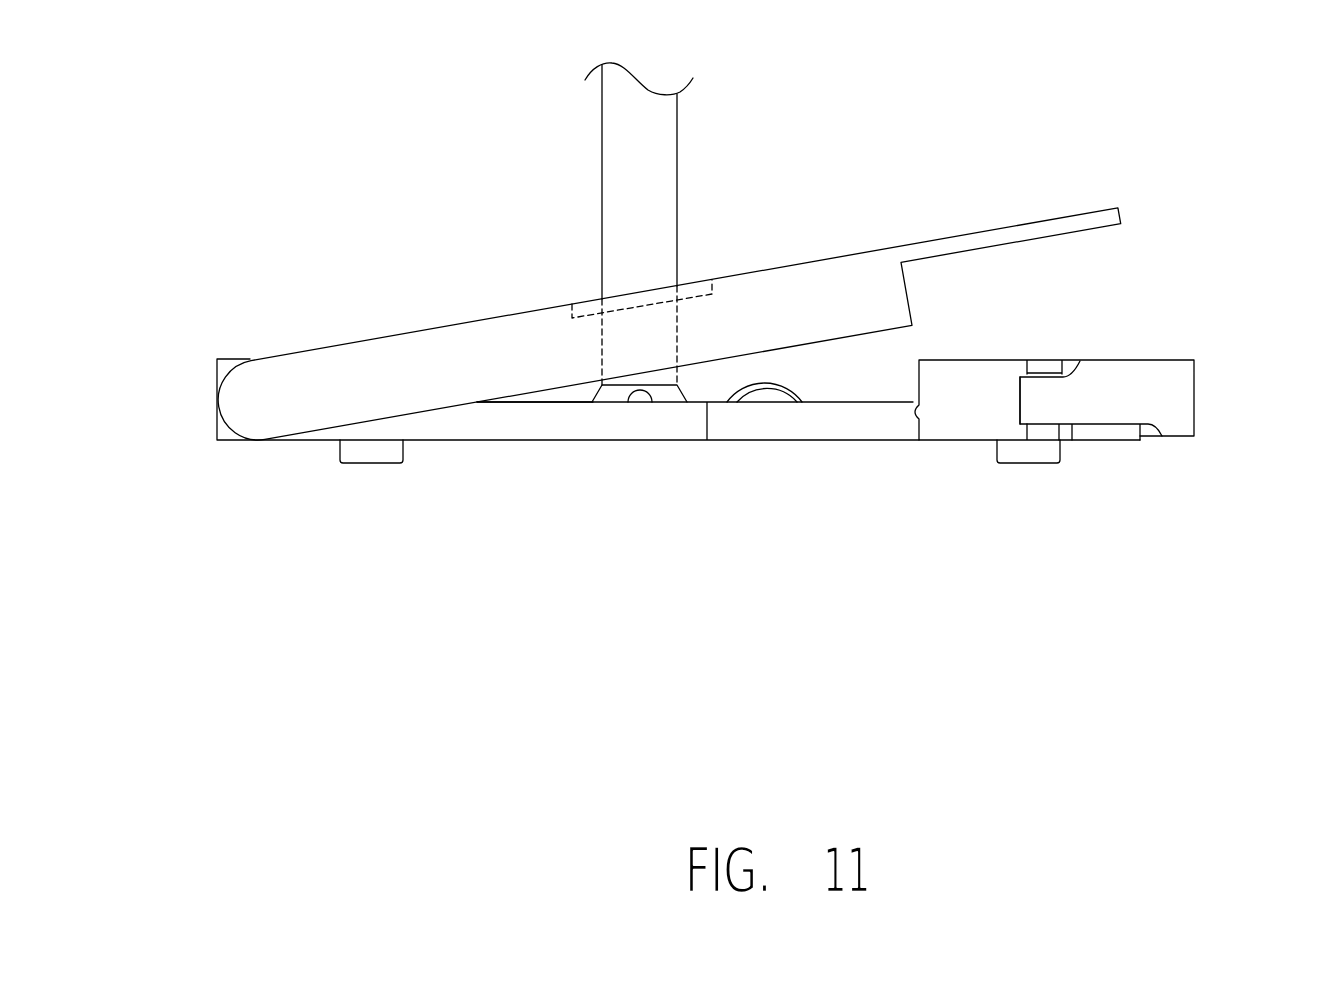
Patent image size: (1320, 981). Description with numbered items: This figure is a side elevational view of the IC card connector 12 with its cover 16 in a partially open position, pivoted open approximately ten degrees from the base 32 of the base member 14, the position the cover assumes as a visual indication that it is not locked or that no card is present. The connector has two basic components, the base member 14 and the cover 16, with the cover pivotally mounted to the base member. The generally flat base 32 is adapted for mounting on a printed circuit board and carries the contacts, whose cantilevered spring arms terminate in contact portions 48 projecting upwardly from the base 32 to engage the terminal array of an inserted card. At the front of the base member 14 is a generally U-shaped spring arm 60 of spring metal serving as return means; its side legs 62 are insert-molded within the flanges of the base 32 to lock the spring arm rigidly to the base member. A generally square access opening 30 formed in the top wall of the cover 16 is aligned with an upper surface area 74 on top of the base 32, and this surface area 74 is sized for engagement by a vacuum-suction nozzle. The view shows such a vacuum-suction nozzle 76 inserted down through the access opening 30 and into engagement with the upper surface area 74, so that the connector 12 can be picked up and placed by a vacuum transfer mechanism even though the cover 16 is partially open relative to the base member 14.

The IC card connector 12 is at (1072, 118).
The base member 14 is at (883, 455).
The cover 16 is at (851, 243).
The access opening 30 is at (705, 291).
The base 32 is at (556, 422).
The contact portions 48 is at (775, 405).
The U-shaped spring arm 60 is at (1168, 389).
The side legs 62 is at (1060, 402).
The upper surface area 74 is at (653, 403).
The vacuum-suction nozzle 76 is at (642, 155).